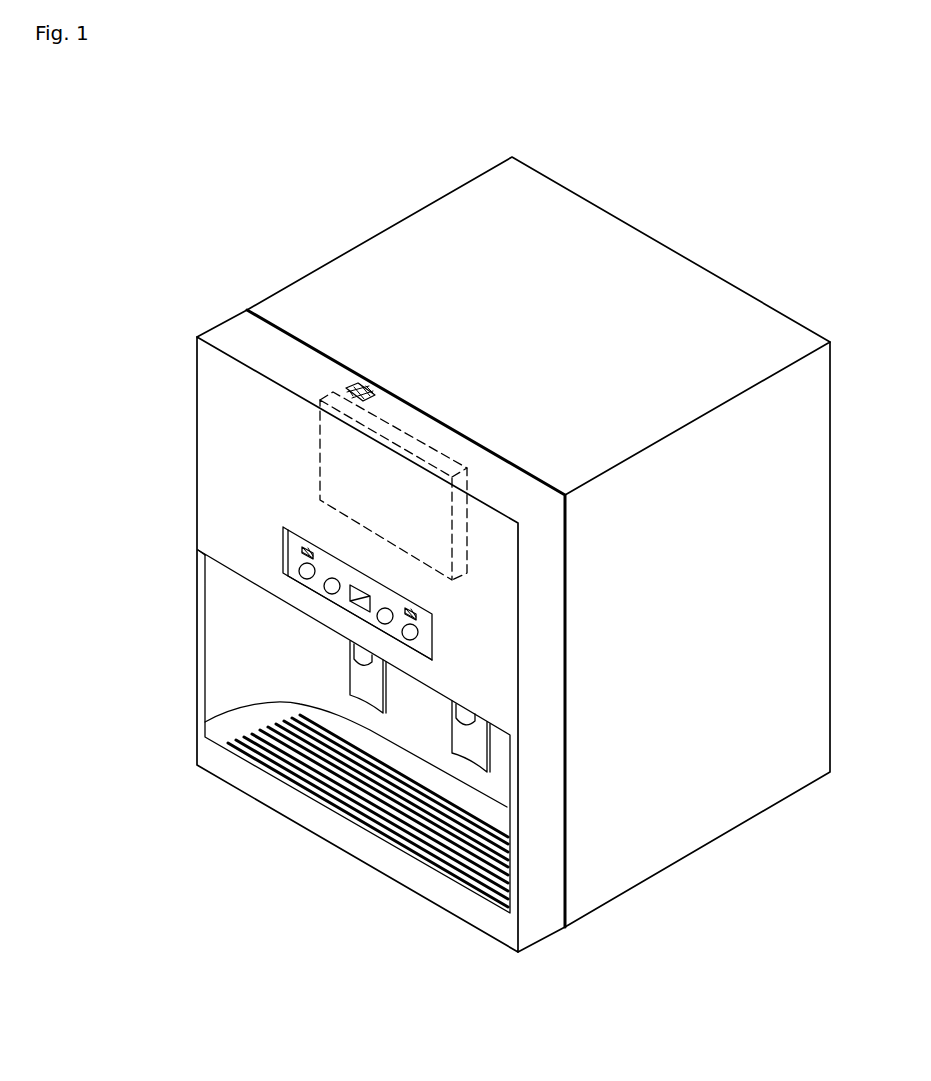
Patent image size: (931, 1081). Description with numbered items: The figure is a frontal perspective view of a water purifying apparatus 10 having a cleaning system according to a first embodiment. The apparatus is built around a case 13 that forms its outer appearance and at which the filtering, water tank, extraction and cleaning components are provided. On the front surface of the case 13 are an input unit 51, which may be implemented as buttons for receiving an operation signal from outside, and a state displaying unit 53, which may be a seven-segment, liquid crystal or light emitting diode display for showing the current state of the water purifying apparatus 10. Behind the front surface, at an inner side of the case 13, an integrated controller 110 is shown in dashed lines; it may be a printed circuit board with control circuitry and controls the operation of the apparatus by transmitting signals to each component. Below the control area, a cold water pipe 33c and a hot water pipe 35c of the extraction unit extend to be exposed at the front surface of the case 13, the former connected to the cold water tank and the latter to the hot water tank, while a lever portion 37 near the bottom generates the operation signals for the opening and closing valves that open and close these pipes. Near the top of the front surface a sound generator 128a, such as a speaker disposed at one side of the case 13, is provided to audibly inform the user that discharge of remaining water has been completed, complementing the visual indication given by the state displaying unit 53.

The water purifying apparatus 10 is at (252, 175).
The case 13 is at (233, 330).
The sound generator 128a is at (360, 378).
The integrated controller 110 is at (315, 450).
The input unit 51 is at (368, 600).
The state displaying unit 53 is at (360, 623).
The hot water pipe 35c is at (353, 647).
The cold water pipe 33c is at (454, 706).
The lever portion 37 is at (272, 704).